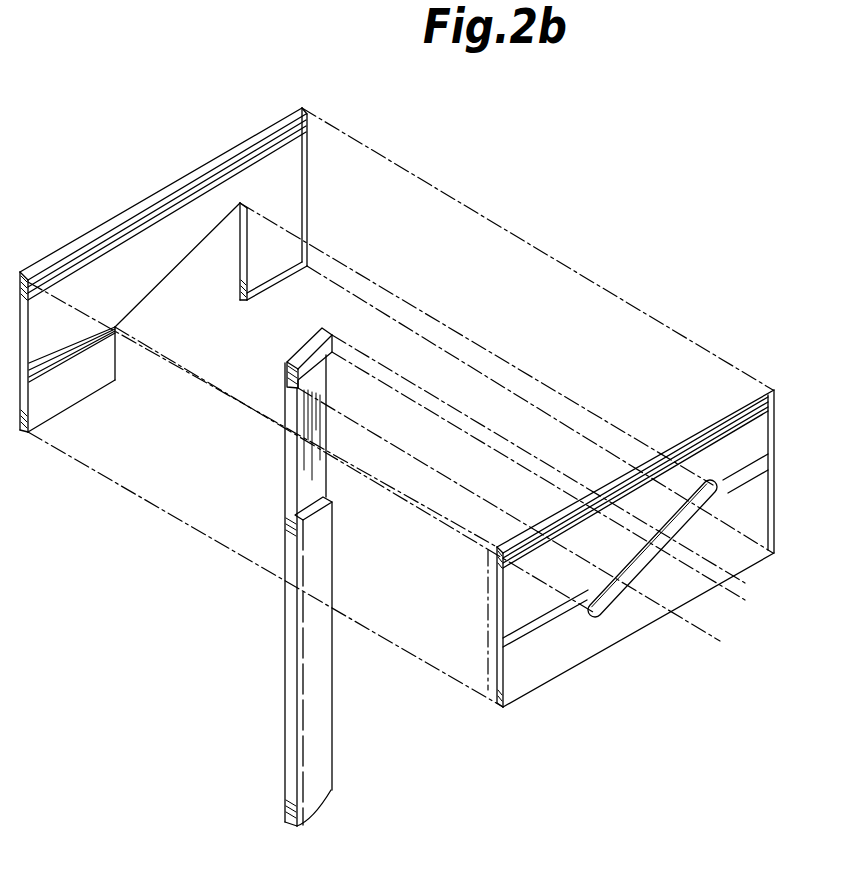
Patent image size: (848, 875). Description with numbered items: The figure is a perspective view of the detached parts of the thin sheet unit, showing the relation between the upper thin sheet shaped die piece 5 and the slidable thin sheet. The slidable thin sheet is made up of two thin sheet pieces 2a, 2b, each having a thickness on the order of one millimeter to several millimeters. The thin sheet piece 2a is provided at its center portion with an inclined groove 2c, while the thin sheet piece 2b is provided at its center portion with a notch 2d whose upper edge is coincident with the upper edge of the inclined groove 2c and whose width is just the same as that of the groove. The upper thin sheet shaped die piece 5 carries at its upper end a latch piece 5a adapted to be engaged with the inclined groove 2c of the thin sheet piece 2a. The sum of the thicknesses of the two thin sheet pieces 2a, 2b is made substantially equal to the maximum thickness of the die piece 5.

The thin sheet piece 2a is at (748, 427).
The thin sheet piece 2b is at (290, 158).
The inclined groove 2c is at (710, 503).
The notch 2d is at (202, 280).
The upper thin sheet shaped die piece 5 is at (305, 685).
The latch piece 5a is at (330, 348).